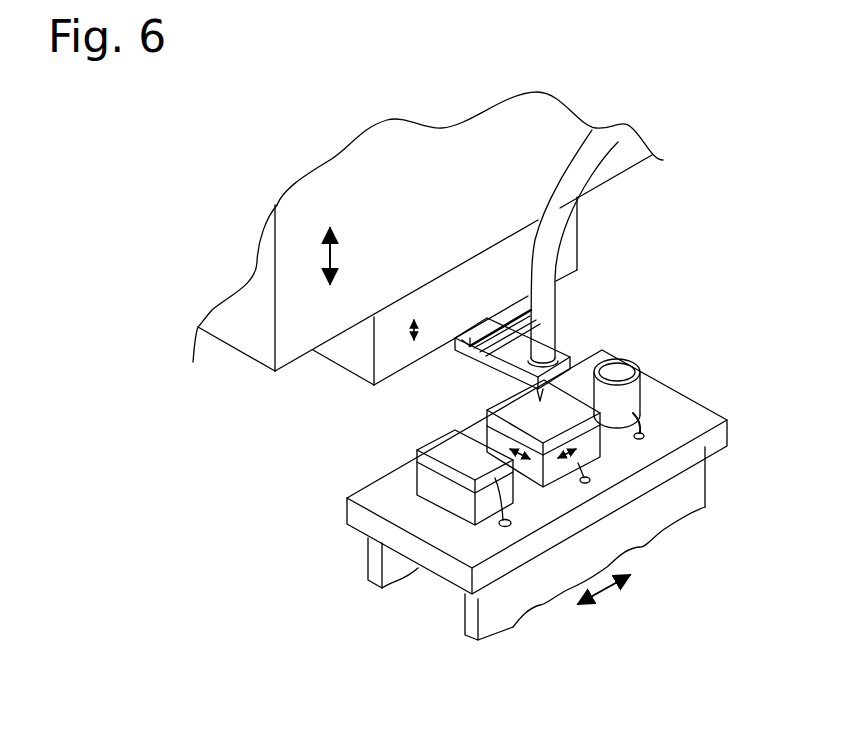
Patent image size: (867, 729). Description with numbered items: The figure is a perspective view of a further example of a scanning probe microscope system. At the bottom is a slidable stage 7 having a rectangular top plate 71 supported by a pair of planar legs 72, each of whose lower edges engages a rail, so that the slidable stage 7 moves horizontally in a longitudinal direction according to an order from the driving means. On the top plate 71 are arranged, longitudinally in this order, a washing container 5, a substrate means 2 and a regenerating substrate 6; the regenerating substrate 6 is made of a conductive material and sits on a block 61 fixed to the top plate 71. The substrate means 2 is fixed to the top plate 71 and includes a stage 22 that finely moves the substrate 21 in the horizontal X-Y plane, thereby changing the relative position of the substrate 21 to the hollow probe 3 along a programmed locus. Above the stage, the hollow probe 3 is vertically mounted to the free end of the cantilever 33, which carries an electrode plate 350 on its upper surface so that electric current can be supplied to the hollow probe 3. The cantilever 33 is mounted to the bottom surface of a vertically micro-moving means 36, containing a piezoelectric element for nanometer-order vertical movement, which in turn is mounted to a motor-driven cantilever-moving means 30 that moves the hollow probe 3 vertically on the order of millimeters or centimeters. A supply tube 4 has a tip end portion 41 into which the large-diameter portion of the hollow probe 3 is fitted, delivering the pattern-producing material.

The cantilever-moving means 30 is at (255, 348).
The vertically micro-moving means 36 is at (355, 360).
The cantilever 33 is at (455, 340).
The electrode plate 350 is at (508, 338).
The tip end portion 41 is at (550, 352).
The hollow probe 3 is at (538, 396).
The supply tube 4 is at (593, 155).
The washing container 5 is at (623, 367).
The slidable stage 7 is at (573, 495).
The top plate 71 is at (690, 408).
The legs 72 is at (472, 613).
The substrate means 2 is at (587, 440).
The substrate 21 is at (493, 412).
The stage 22 is at (485, 432).
The regenerating substrate 6 is at (441, 468).
The block 61 is at (413, 468).